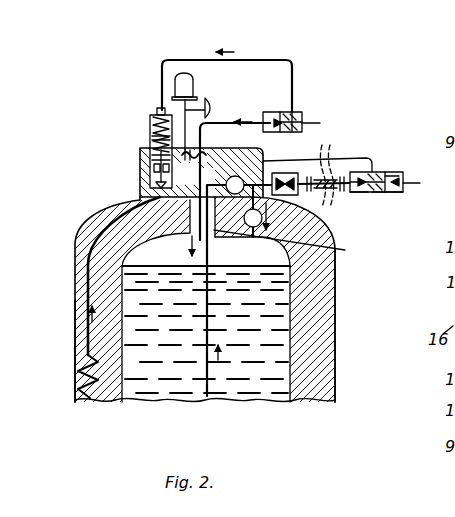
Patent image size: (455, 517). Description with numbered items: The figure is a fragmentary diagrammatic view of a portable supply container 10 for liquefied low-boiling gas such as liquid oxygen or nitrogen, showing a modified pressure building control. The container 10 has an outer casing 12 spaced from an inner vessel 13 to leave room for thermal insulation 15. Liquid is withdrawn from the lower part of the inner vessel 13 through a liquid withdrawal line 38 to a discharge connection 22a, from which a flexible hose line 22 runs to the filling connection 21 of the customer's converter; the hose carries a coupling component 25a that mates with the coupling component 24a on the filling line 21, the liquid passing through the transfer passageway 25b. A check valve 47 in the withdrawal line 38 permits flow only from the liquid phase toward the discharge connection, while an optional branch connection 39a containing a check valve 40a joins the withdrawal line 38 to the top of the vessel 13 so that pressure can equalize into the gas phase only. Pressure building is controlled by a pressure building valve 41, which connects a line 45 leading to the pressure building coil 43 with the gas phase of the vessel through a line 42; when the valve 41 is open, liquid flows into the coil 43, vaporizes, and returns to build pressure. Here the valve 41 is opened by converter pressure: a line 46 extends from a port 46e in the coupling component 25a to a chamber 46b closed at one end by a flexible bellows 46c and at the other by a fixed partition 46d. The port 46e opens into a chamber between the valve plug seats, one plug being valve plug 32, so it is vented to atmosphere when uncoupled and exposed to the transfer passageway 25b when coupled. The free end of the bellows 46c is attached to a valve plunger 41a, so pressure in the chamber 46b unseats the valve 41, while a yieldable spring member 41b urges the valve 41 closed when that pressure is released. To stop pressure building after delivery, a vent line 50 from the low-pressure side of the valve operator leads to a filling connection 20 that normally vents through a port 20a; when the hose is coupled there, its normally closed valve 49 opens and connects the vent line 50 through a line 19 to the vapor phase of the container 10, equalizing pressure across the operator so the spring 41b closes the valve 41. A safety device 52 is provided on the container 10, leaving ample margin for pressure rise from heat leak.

The portable liquid transport container 10 is at (74, 237).
The outer casing 12 is at (75, 302).
The inner vessel 13 is at (122, 271).
The thermal insulation 15 is at (318, 325).
The line 19 is at (226, 122).
The filling connection 20 is at (275, 111).
The port 20a is at (296, 112).
The filling connection 21 is at (406, 187).
The flexible hose line 22 is at (333, 196).
The discharge connection 22a is at (288, 172).
The mating coupling component 24a is at (395, 194).
The coupling component 25a is at (362, 193).
The transfer passageway 25b is at (386, 198).
The valve plug 32 is at (361, 172).
The liquid withdrawal line 38 is at (207, 388).
The branch connection 39a is at (294, 245).
The check valve 40a is at (252, 238).
The pressure building valve 41 is at (158, 188).
The valve plunger 41a is at (160, 108).
The yieldable spring member 41b is at (154, 118).
The line 42 is at (176, 249).
The pressure building coil 43 is at (80, 388).
The line 45 is at (88, 339).
The line 46 is at (326, 158).
The chamber 46b is at (150, 158).
The flexible bellows 46c is at (152, 138).
The fixed partition 46d is at (154, 170).
The port 46e is at (383, 178).
The check valve 47 is at (245, 225).
The normally closed valve 49 is at (312, 123).
The vent line 50 is at (279, 57).
The safety device 52 is at (196, 90).